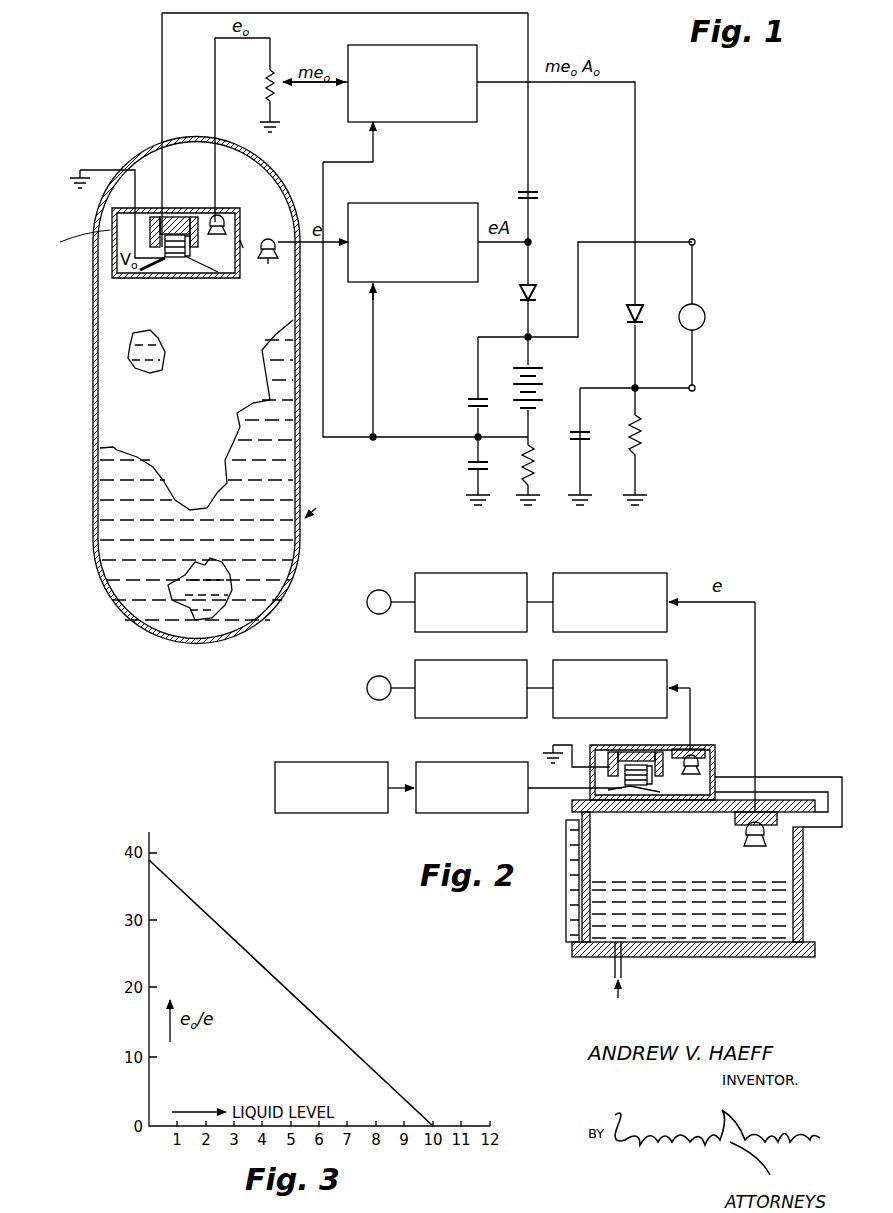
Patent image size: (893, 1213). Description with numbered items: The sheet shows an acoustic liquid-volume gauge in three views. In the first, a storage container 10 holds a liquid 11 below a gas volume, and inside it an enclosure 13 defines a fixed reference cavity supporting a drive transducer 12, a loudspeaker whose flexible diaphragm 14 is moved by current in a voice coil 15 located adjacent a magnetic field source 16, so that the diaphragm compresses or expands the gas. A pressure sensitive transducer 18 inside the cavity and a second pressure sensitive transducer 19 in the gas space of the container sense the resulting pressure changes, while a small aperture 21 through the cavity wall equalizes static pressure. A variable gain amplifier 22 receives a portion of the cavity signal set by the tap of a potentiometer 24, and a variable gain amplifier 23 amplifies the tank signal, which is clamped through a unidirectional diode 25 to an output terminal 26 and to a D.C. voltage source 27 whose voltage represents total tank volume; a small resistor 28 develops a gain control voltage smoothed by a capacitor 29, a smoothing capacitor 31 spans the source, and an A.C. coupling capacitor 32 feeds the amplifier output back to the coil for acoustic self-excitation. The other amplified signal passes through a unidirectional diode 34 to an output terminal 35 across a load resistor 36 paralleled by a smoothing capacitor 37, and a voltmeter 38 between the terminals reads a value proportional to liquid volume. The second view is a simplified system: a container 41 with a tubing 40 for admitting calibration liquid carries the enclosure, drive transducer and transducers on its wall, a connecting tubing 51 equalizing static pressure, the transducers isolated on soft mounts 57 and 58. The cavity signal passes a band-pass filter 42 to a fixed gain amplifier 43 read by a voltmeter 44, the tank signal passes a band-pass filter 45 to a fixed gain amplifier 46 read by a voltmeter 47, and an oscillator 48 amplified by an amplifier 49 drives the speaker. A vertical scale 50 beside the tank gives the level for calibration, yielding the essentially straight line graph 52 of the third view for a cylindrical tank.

In FIG. 1, the storage container 10 is at (268, 182).
In FIG. 1, the liquid 11 is at (266, 522).
In FIG. 1, the drive transducer 12 is at (200, 244).
In FIG. 2, the drive transducer 12 is at (660, 778).
In FIG. 1, the enclosure 13 is at (222, 210).
In FIG. 2, the enclosure 13 is at (612, 748).
In FIG. 1, the flexible diaphragm 14 is at (152, 272).
In FIG. 2, the flexible diaphragm 14 is at (648, 794).
In FIG. 1, the voice coil 15 is at (178, 262).
In FIG. 2, the voice coil 15 is at (632, 788).
In FIG. 1, the magnetic field source 16 is at (170, 220).
In FIG. 2, the magnetic field source 16 is at (638, 752).
In FIG. 1, the pressure sensitive transducer 18 is at (232, 222).
In FIG. 2, the pressure sensitive transducer 18 is at (703, 768).
In FIG. 1, the pressure sensitive transducer 19 is at (269, 264).
In FIG. 2, the pressure sensitive transducer 19 is at (762, 846).
In FIG. 1, the aperture 21 is at (243, 248).
In FIG. 1, the variable gain amplifier 22 is at (440, 45).
In FIG. 1, the variable gain amplifier 23 is at (440, 203).
In FIG. 1, the potentiometer 24 is at (272, 72).
In FIG. 1, the unidirectional diode 25 is at (531, 293).
In FIG. 1, the output terminal 26 is at (696, 243).
In FIG. 1, the D.C. voltage source 27 is at (534, 410).
In FIG. 1, the small resistor 28 is at (534, 450).
In FIG. 1, the capacitor 29 is at (468, 463).
In FIG. 1, the smoothing capacitor 31 is at (470, 400).
In FIG. 1, the A.C. coupling capacitor 32 is at (531, 194).
In FIG. 1, the unidirectional diode 34 is at (638, 306).
In FIG. 1, the output terminal 35 is at (696, 389).
In FIG. 1, the load resistor 36 is at (641, 422).
In FIG. 1, the smoothing capacitor 37 is at (584, 432).
In FIG. 1, the voltmeter 38 is at (702, 308).
In FIG. 2, the tubing 40 is at (610, 974).
In FIG. 2, the container 41 is at (596, 876).
In FIG. 2, the band-pass filter 42 is at (633, 660).
In FIG. 2, the fixed gain amplifier 43 is at (495, 660).
In FIG. 2, the voltmeter 44 is at (384, 676).
In FIG. 2, the band-pass filter 45 is at (633, 573).
In FIG. 2, the fixed gain amplifier 46 is at (495, 573).
In FIG. 2, the voltmeter 47 is at (384, 590).
In FIG. 2, the oscillator 48 is at (350, 762).
In FIG. 2, the amplifier 49 is at (490, 762).
In FIG. 2, the vertical scale 50 is at (566, 914).
In FIG. 2, the connecting tubing 51 is at (796, 777).
In FIG. 3, the straight line graph 52 is at (228, 930).
In FIG. 2, the mount 57 is at (690, 748).
In FIG. 2, the mount 58 is at (738, 826).